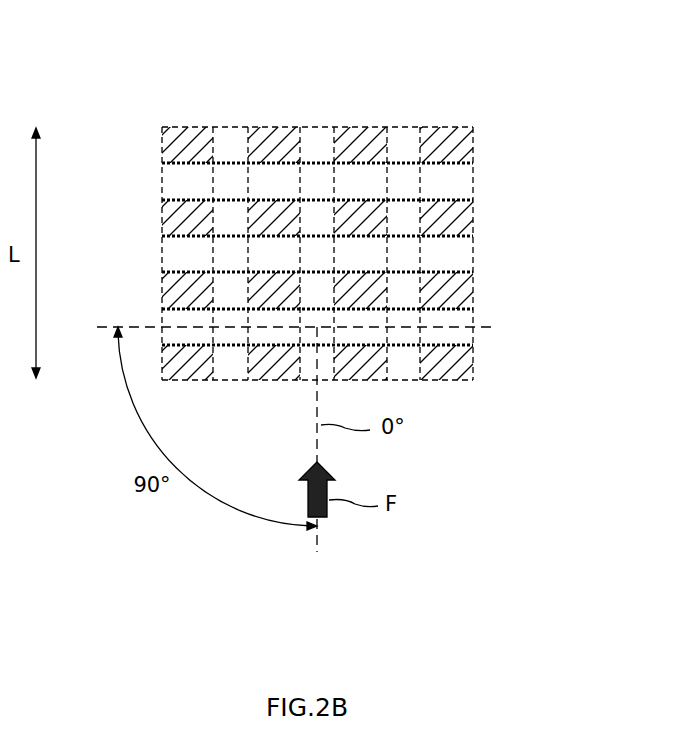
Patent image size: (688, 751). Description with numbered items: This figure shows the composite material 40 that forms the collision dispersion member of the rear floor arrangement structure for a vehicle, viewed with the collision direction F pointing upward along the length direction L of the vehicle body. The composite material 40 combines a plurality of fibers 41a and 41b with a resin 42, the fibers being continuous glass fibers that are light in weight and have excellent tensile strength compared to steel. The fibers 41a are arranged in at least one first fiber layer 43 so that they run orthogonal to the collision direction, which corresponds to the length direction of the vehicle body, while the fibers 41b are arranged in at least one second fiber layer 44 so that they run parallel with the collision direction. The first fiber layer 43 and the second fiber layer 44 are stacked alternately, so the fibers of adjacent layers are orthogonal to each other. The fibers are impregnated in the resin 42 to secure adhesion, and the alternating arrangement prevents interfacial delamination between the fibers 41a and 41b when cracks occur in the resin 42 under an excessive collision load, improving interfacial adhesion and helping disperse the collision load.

The composite material 40 is at (93, 89).
The fibers 41a is at (462, 182).
The fibers 41b is at (231, 127).
The resin 42 is at (165, 144).
The first fiber layer 43 is at (565, 182).
The second fiber layer 44 is at (232, 66).